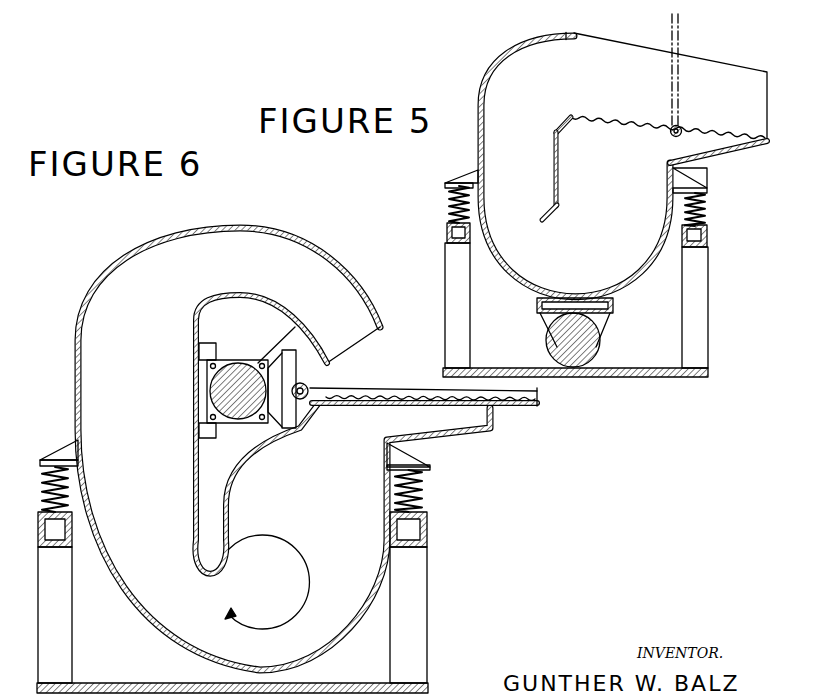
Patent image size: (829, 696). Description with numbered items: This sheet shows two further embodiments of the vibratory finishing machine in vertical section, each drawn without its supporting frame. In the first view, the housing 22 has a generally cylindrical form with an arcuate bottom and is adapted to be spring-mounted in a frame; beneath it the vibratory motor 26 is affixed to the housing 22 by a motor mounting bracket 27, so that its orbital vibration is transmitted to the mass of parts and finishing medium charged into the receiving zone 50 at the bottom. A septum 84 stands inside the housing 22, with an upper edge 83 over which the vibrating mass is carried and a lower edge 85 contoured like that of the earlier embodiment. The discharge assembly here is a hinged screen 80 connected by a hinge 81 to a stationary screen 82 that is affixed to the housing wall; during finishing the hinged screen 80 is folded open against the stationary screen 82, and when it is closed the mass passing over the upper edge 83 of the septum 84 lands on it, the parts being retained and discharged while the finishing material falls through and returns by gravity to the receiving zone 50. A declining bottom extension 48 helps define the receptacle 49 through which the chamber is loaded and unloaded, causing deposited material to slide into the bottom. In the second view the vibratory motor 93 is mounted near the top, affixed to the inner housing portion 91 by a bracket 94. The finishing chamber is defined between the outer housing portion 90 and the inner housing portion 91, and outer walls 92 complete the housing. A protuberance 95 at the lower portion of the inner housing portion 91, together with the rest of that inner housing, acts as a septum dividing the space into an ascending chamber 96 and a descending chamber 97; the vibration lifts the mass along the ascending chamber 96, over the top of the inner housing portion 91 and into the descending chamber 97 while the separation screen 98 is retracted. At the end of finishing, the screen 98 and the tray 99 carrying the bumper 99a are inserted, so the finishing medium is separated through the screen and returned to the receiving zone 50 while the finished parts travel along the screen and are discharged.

In FIG. 5, the housing 22 is at (498, 62).
In FIG. 5, the vibratory motor 26 is at (594, 345).
In FIG. 5, the motor mounting bracket 27 is at (613, 313).
In FIG. 5, the bottom extension 48 is at (733, 152).
In FIG. 5, the receptacle 49 is at (693, 146).
In FIG. 5, the hinged screen 80 is at (670, 72).
In FIG. 5, the hinge 81 is at (670, 136).
In FIG. 5, the stationary screen 82 is at (731, 130).
In FIG. 5, the upper edge of the septum 83 is at (563, 125).
In FIG. 5, the septum 84 is at (554, 160).
In FIG. 5, the lower edge of the septum 85 is at (543, 212).
In FIG. 6, the outer housing portion 90 is at (113, 292).
In FIG. 6, the inner housing portion 91 is at (203, 308).
In FIG. 6, the outer walls 92 is at (148, 420).
In FIG. 6, the vibratory motor 93 is at (238, 363).
In FIG. 6, the bracket 94 is at (282, 352).
In FIG. 6, the protuberance 95 is at (211, 572).
In FIG. 6, the ascending chamber 96 is at (163, 607).
In FIG. 6, the descending chamber 97 is at (337, 480).
In FIG. 6, the separation screen 98 is at (385, 392).
In FIG. 6, the tray 99 is at (522, 408).
In FIG. 6, the bumper 99a is at (309, 389).
In FIG. 6, the receiving zone 50 is at (193, 628).